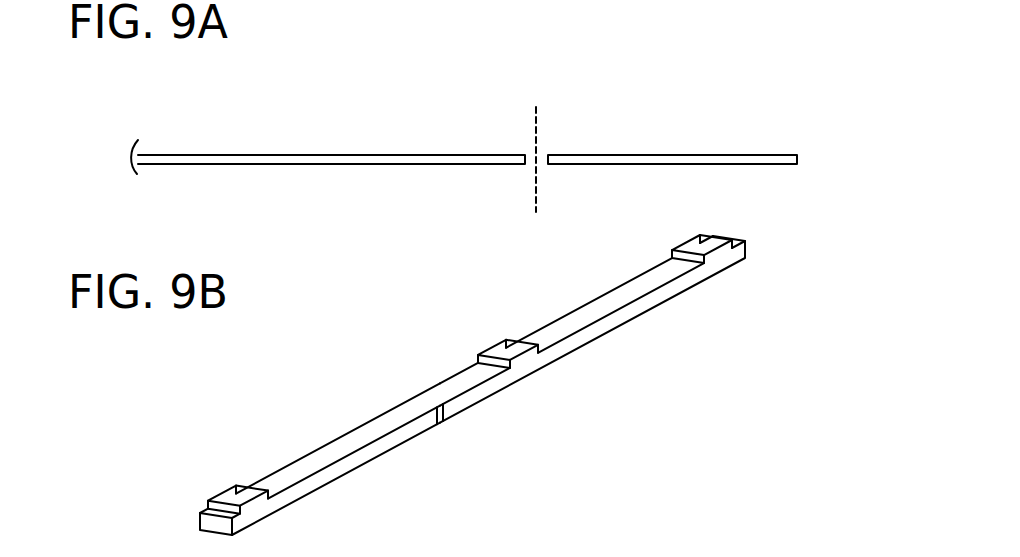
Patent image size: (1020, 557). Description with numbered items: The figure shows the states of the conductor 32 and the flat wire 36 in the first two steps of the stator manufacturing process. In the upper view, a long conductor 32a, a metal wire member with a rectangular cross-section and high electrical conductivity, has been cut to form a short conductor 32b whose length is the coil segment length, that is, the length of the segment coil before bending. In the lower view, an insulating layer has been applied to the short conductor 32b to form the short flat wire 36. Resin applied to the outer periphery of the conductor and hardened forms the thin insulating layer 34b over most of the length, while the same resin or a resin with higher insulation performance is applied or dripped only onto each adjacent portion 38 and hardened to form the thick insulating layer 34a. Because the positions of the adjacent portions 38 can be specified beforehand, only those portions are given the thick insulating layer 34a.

In FIG. 9A, the conductor 32 is at (479, 131).
In FIG. 9A, the long conductor 32a is at (329, 154).
In FIG. 9A, the short conductor 32b is at (686, 154).
In FIG. 9B, the flat wire 36 is at (500, 362).
In FIG. 9B, the thick insulating layer 34a is at (472, 401).
In FIG. 9B, the thin insulating layer 34b is at (578, 342).
In FIG. 9B, the adjacent portion 38 is at (672, 253).